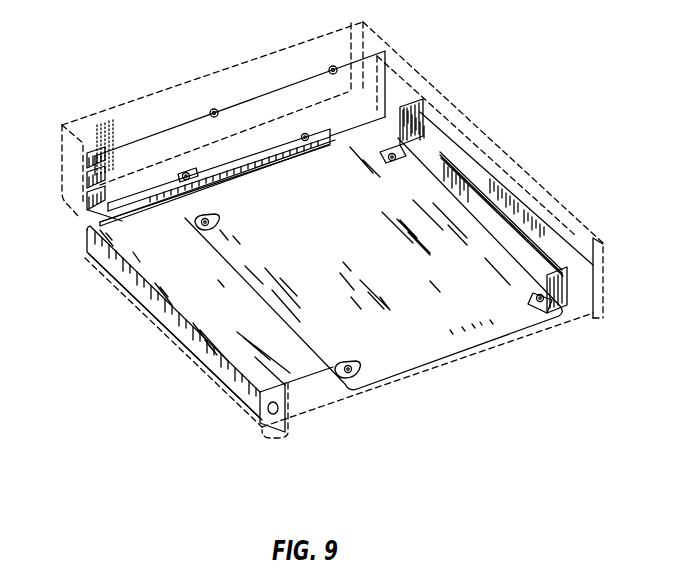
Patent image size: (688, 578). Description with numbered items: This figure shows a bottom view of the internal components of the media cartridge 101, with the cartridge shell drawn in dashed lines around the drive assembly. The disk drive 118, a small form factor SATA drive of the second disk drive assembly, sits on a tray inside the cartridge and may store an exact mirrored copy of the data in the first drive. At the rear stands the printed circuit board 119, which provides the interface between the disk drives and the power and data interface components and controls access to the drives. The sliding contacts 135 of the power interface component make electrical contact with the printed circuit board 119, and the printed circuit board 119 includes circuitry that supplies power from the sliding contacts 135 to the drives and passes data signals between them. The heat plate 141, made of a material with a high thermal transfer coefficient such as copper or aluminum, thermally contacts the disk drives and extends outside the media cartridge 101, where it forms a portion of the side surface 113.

The media cartridge 101 is at (560, 64).
The side surface 113 is at (496, 180).
The disk drive 118 is at (505, 338).
The printed circuit board 119 is at (265, 92).
The sliding contacts 135 is at (80, 210).
The heat plate 141 is at (420, 110).